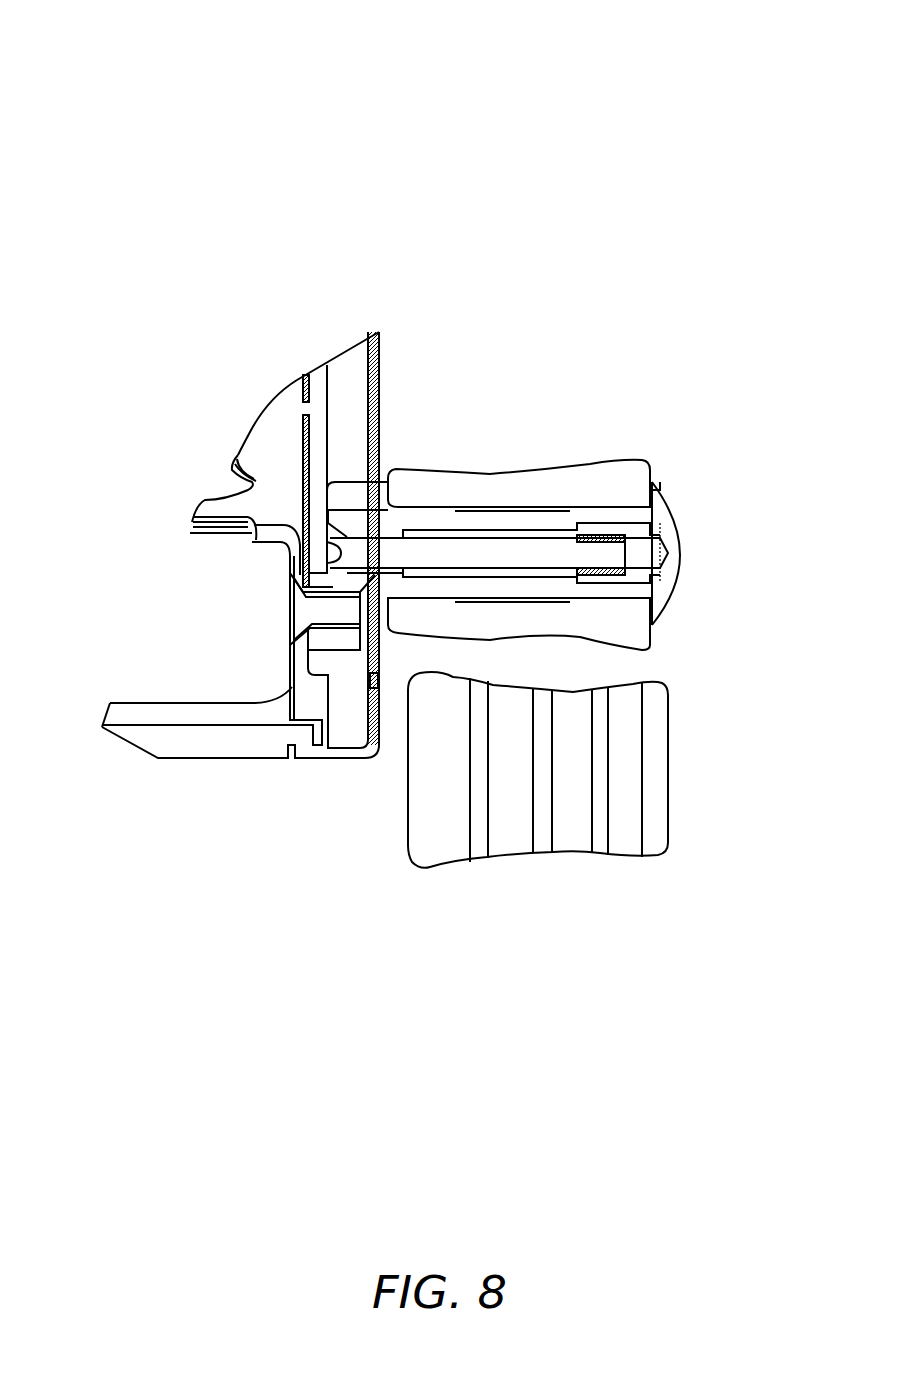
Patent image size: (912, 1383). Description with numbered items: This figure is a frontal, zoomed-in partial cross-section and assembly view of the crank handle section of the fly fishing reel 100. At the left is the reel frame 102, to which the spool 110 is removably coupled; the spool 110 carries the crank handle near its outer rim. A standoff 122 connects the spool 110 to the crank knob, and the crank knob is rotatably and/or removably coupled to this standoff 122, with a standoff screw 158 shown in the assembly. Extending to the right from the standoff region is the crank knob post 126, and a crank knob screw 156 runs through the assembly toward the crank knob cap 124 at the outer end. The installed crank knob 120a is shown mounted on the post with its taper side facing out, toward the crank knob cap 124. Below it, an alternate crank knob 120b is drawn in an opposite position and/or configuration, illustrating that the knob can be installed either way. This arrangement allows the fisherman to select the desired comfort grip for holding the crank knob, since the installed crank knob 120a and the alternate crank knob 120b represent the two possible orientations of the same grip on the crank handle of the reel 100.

The fly fishing reel 100 is at (103, 53).
The spool 110 is at (350, 370).
The reel frame 102 is at (218, 745).
The standoff 122 is at (352, 698).
The standoff screw 158 is at (317, 613).
The crank knob screw 156 is at (375, 553).
The crank knob post 126 is at (482, 525).
The installed crank knob 120a is at (575, 488).
The crank knob cap 124 is at (660, 528).
The alternate crank knob 120b is at (570, 827).